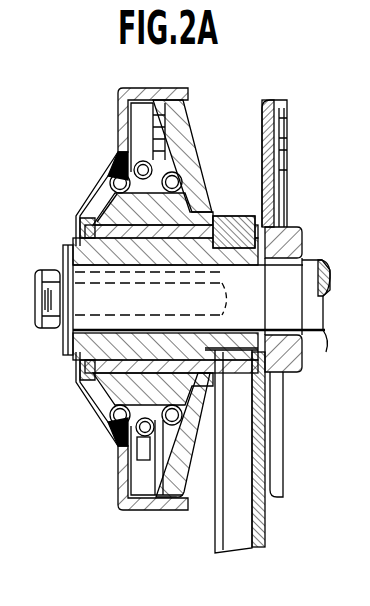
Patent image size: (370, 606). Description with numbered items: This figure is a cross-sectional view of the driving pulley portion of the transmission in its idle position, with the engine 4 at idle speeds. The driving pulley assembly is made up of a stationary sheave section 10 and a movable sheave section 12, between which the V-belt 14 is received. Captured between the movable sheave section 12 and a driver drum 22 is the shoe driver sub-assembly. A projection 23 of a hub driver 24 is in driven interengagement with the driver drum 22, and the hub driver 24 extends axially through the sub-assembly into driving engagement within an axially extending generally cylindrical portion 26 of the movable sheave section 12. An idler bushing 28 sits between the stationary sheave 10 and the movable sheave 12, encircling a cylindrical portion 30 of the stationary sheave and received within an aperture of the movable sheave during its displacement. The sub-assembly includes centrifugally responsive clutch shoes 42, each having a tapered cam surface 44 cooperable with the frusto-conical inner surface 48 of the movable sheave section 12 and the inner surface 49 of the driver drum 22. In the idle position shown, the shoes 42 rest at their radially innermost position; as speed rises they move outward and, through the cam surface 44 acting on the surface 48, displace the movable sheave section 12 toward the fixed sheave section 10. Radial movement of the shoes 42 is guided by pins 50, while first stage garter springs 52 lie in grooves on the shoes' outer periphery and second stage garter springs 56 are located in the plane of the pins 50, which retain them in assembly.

The engine 4 is at (314, 257).
The stationary sheave section 10 is at (277, 96).
The movable sheave section 12 is at (190, 134).
The V-belt 14 is at (248, 517).
The driver drum 22 is at (116, 89).
The projection 23 is at (80, 243).
The hub driver 24 is at (95, 225).
The axially extending generally cylindrical portion 26 is at (212, 223).
The idler bushing 28 is at (230, 352).
The axially extending generally cylindrical portion 30 is at (237, 337).
The clutch shoes 42 is at (102, 212).
The tapered cam surface 44 is at (185, 190).
The frusto-conical inner surface 48 is at (190, 197).
The frusto-conical inner surface 49 is at (102, 192).
The pins 50 is at (142, 452).
The garter springs 52 is at (182, 167).
The garter springs 56 is at (143, 160).